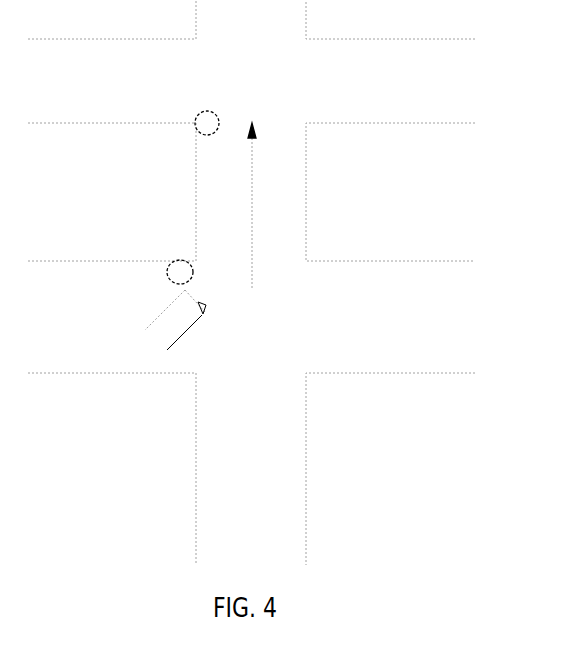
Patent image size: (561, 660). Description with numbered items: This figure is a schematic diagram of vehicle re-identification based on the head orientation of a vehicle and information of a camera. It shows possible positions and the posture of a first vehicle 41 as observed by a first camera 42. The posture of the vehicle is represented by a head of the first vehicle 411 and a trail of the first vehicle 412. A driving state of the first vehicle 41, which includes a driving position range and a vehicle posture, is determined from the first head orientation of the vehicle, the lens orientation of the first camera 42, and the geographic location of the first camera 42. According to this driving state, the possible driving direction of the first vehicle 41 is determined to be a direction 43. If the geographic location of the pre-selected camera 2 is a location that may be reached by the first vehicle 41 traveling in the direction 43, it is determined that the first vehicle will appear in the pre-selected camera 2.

The pre-selected camera 2 is at (200, 118).
The first vehicle 41 is at (175, 338).
The head of the first vehicle 411 is at (203, 312).
The trail of the first vehicle 412 is at (157, 337).
The first camera 42 is at (170, 282).
The direction 43 is at (266, 205).